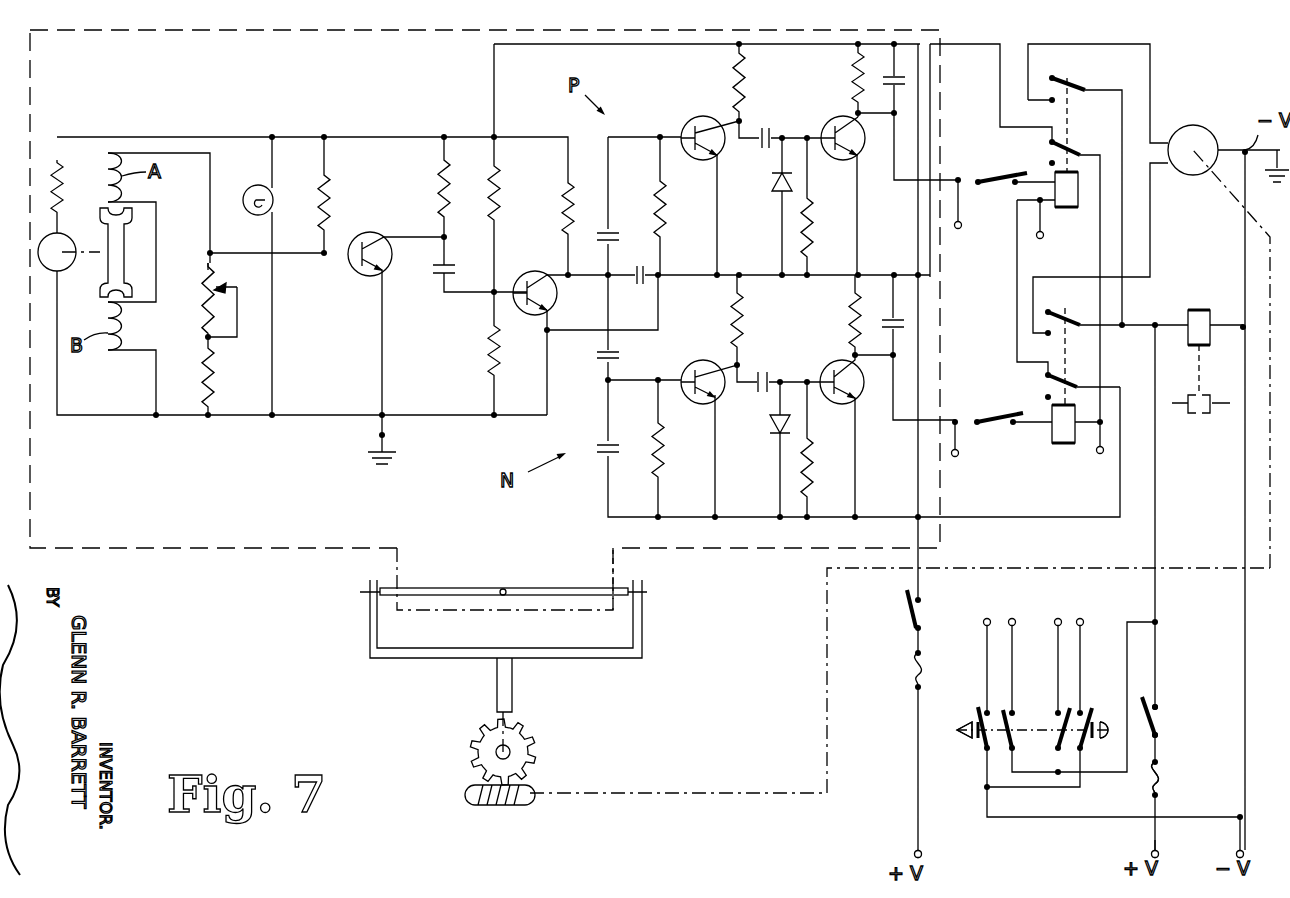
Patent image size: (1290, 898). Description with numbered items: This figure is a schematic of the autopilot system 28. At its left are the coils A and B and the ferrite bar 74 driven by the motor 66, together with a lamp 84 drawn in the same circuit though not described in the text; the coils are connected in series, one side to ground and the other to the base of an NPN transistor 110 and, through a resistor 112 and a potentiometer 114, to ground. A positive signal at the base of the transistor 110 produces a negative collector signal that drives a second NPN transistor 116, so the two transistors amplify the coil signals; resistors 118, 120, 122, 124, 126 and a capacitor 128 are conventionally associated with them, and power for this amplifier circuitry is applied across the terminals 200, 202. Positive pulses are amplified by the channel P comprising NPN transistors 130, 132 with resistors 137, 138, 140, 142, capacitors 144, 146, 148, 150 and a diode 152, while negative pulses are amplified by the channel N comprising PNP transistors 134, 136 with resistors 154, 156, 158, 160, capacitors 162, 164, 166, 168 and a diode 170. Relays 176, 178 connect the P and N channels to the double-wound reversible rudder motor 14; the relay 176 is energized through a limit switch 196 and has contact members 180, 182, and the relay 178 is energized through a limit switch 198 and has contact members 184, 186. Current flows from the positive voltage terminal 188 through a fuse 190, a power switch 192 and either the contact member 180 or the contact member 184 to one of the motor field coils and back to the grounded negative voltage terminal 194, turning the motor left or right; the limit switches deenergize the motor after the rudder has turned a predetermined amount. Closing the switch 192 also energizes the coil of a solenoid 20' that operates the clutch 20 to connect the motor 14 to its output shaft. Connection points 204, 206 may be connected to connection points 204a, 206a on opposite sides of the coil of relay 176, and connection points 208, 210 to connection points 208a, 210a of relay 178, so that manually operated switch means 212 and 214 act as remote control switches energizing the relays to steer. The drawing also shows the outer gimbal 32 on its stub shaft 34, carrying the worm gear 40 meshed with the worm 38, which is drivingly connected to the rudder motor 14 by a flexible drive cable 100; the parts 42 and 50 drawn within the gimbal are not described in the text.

The rudder motor 14 is at (1200, 130).
The clutch 20 is at (1201, 399).
The solenoid 20' is at (1211, 305).
The autopilot system 28 is at (1217, 83).
The outer gimbal 32 is at (642, 637).
The stub shaft 34 is at (508, 688).
The worm 38 is at (520, 802).
The worm gear 40 is at (520, 750).
The electrode 42 is at (622, 585).
The electrode bar 50 is at (505, 590).
The motor 66 is at (63, 270).
The ferrite bar 74 is at (122, 262).
The lamp 84 is at (252, 186).
The flexible drive cable 100 is at (758, 796).
The NPN transistor 110 is at (372, 234).
The resistor 112 is at (214, 385).
The potentiometer 114 is at (205, 302).
The NPN transistor 116 is at (523, 314).
The resistor 118 is at (327, 166).
The resistor 120 is at (444, 186).
The resistor 122 is at (497, 170).
The resistor 124 is at (566, 214).
The resistor 126 is at (493, 345).
The capacitor 128 is at (444, 280).
The NPN transistor 130 is at (690, 121).
The NPN transistor 132 is at (834, 125).
The PNP transistor 134 is at (690, 369).
The PNP transistor 136 is at (826, 364).
The resistor 137 is at (666, 196).
The resistor 138 is at (811, 231).
The resistor 140 is at (743, 80).
The resistor 142 is at (855, 80).
The capacitor 144 is at (611, 226).
The capacitor 146 is at (775, 118).
The capacitor 148 is at (891, 84).
The capacitor 150 is at (636, 287).
The diode 152 is at (780, 194).
The resistor 154 is at (741, 320).
The resistor 156 is at (663, 456).
The resistor 158 is at (810, 474).
The resistor 160 is at (853, 310).
The capacitor 162 is at (890, 316).
The capacitor 164 is at (605, 446).
The capacitor 166 is at (769, 378).
The capacitor 168 is at (605, 365).
The diode 170 is at (775, 440).
The relay 176 is at (1065, 208).
The relay 178 is at (1063, 443).
The contact member 180 is at (1078, 85).
The contact member 182 is at (1046, 148).
The contact member 184 is at (1055, 312).
The contact member 186 is at (1045, 386).
The positive voltage terminal 188 is at (1152, 852).
The fuse 190 is at (1160, 771).
The power switch 192 is at (1158, 715).
The negative voltage terminal 194 is at (1240, 816).
The limit switch 196 is at (996, 190).
The limit switch 198 is at (1002, 431).
The terminal 200 is at (922, 852).
The terminal 202 is at (386, 435).
The connection point 204 is at (988, 617).
The connection point 204a is at (960, 229).
The connection point 206 is at (1011, 617).
The connection point 206a is at (1042, 239).
The connection point 208 is at (1060, 610).
The connection point 208a is at (957, 457).
The connection point 210 is at (1081, 617).
The connection point 210a is at (1101, 454).
The manually operated switch means 212 is at (968, 752).
The manually operated switch means 214 is at (1095, 694).